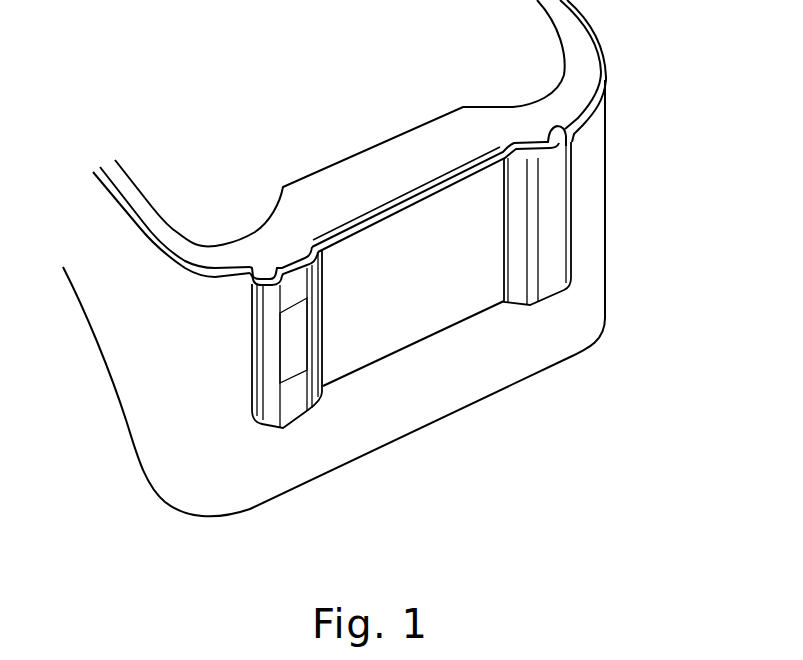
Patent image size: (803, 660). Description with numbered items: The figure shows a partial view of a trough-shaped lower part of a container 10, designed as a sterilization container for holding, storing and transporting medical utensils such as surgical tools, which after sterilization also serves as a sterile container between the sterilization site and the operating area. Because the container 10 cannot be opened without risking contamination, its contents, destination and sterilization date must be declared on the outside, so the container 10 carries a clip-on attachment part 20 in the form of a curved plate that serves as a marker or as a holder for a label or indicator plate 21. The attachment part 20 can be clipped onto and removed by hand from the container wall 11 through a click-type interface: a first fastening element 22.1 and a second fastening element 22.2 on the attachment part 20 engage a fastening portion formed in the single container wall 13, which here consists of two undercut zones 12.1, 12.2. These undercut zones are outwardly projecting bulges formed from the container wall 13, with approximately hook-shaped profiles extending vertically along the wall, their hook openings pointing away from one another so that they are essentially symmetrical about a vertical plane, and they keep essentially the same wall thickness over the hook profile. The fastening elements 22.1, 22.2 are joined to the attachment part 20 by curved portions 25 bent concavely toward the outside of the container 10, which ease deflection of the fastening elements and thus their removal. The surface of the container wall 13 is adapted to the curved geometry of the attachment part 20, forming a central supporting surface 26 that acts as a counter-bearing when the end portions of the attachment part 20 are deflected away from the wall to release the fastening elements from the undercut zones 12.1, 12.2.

The container 10 is at (90, 343).
The container wall 11 is at (118, 268).
The first sub-section/undercut zone 12.1 is at (273, 266).
The second sub-section/undercut zone 12.2 is at (557, 137).
The container wall 13 is at (493, 370).
The attachment part 20 is at (415, 320).
The label/indicator plate 21 is at (285, 307).
The first fastening element 22.1 is at (332, 362).
The second fastening element 22.2 is at (553, 262).
The curved portion 25 is at (337, 342).
The supporting surface 26 is at (403, 195).